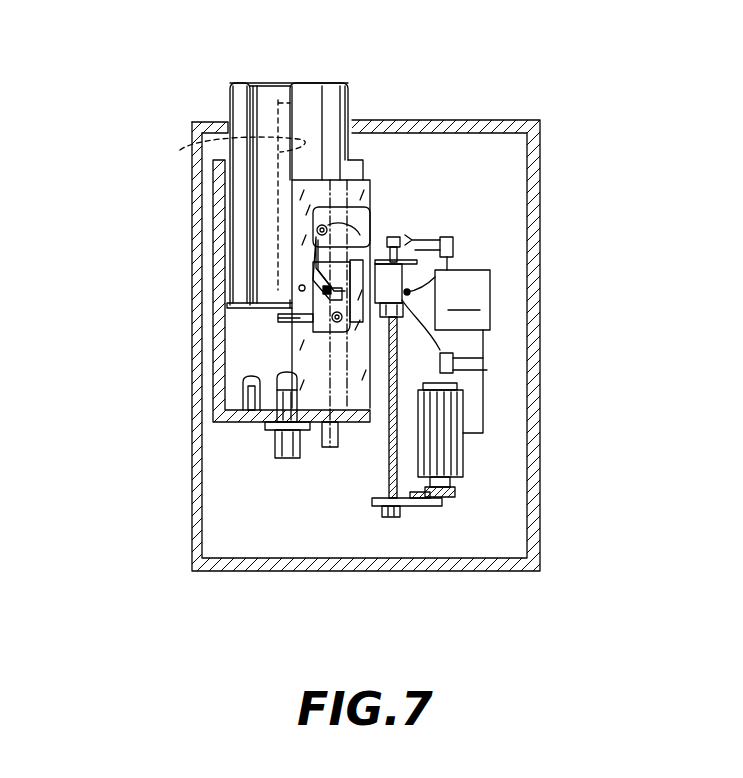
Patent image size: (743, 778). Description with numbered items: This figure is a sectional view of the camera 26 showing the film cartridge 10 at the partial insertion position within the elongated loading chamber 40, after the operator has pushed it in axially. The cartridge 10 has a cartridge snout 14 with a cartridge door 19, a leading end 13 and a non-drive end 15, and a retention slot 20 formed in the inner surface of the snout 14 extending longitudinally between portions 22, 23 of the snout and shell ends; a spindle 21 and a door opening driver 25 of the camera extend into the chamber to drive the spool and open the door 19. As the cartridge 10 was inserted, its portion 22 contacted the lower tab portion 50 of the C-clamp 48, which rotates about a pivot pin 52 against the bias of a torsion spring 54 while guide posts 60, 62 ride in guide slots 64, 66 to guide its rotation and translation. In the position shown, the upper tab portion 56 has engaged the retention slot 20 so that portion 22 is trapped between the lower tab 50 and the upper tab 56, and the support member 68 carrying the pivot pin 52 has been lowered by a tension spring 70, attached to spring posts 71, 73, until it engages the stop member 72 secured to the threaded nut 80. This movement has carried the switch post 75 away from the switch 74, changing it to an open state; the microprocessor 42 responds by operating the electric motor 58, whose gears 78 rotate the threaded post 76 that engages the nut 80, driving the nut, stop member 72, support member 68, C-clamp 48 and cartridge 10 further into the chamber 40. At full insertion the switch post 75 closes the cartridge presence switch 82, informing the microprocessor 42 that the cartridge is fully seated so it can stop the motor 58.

The film cartridge 10 is at (365, 62).
The leading end 13 is at (290, 330).
The cartridge snout 14 is at (262, 83).
The non-drive end 15 is at (311, 83).
The cartridge door 19 is at (248, 100).
The retention slot 20 is at (300, 142).
The spindle 21 is at (283, 458).
The portion 22 is at (290, 305).
The portion 23 is at (278, 100).
The door opening driver 25 is at (255, 410).
The camera 26 is at (612, 297).
The chamber 40 is at (237, 394).
The microprocessor 42 is at (462, 300).
The C-clamp 48 is at (280, 322).
The lower tab portion 50 is at (295, 333).
The pivot pin 52 is at (313, 283).
The torsion spring 54 is at (300, 288).
The upper tab portion 56 is at (323, 290).
The electric motor 58 is at (460, 460).
The guide post 60 is at (355, 215).
The guide post 62 is at (335, 320).
The guide slot 64 is at (325, 195).
The guide slot 66 is at (336, 447).
The support member 68 is at (380, 265).
The tension spring 70 is at (410, 292).
The spring post 71 is at (440, 265).
The stop member 72 is at (455, 370).
The spring post 73 is at (487, 345).
The switch 74 is at (467, 270).
The switch post 75 is at (410, 243).
The threaded post 76 is at (382, 500).
The gears 78 is at (447, 508).
The threaded nut 80 is at (461, 336).
The cartridge presence switch 82 is at (455, 383).